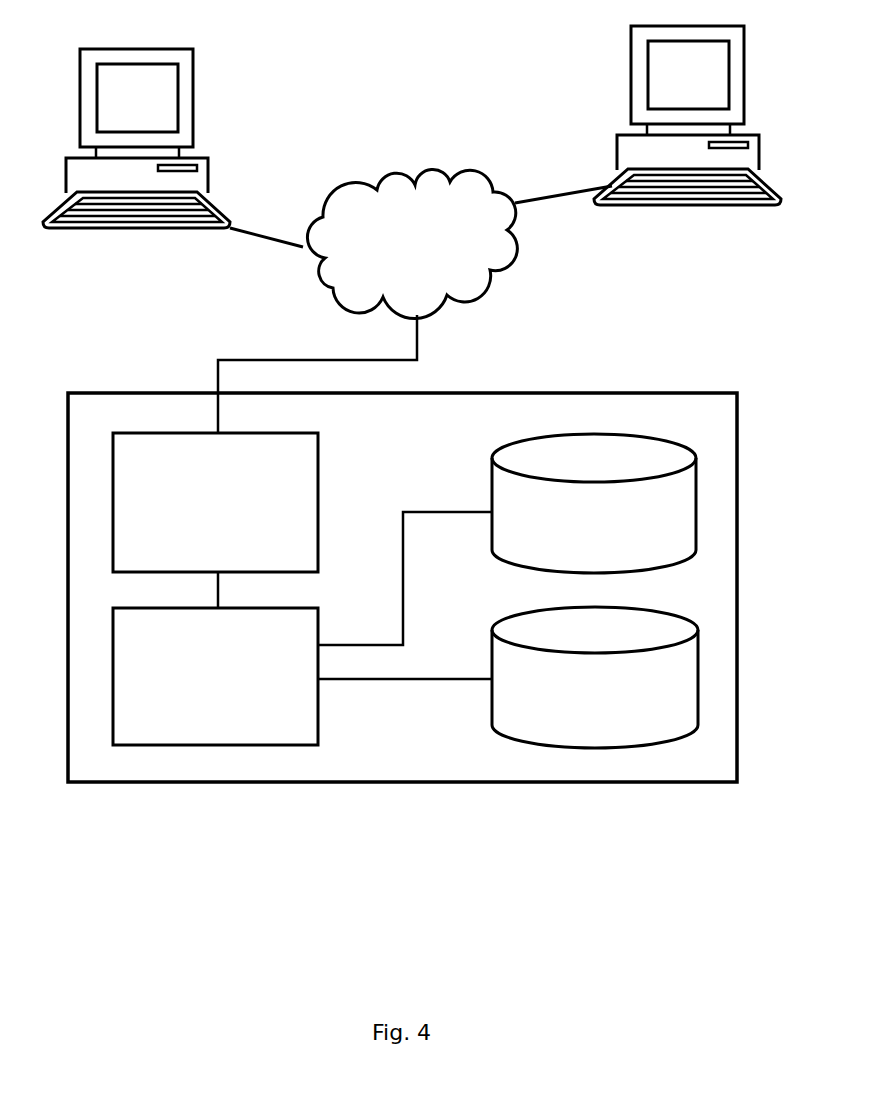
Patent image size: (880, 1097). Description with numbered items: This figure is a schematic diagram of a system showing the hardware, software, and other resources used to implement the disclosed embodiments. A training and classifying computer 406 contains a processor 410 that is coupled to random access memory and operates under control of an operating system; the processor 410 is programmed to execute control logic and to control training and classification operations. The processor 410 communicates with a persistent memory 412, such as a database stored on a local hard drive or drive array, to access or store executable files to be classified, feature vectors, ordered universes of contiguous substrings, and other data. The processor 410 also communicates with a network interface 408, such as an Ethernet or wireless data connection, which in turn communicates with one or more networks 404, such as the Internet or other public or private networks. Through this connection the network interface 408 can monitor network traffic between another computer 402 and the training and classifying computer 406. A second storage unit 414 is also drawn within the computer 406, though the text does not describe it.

The computer 402 is at (195, 90).
The network 404 is at (520, 247).
The training and classifying computer 406 is at (632, 64).
The network interface 408 is at (318, 523).
The processor 410 is at (318, 722).
The persistent memory 412 is at (488, 482).
The database 414 is at (490, 644).